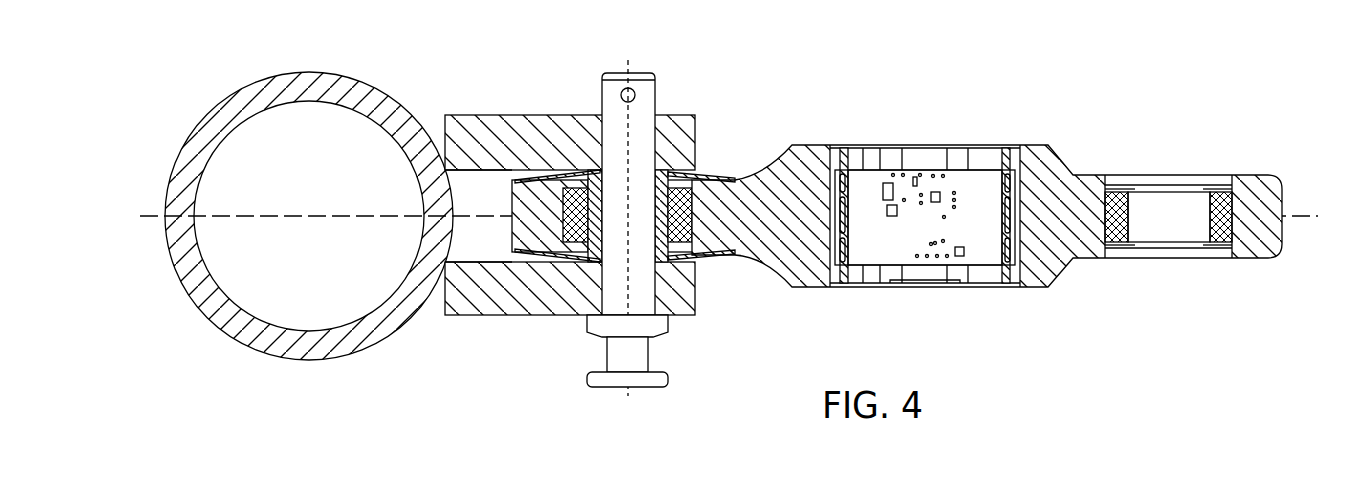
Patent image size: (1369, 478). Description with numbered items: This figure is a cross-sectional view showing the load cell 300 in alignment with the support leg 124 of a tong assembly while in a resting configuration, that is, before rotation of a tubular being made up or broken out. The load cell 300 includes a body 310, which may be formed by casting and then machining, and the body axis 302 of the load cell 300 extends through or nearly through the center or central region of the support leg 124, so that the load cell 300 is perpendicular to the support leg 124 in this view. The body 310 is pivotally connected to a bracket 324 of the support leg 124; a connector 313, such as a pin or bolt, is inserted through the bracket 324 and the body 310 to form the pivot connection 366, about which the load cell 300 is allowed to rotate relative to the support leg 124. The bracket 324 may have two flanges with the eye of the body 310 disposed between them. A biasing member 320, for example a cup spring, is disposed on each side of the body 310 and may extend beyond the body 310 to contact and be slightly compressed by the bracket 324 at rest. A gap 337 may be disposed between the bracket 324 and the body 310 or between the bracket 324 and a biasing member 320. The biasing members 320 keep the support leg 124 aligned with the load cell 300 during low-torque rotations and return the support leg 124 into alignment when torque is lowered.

The support leg 124 is at (297, 362).
The load cell 300 is at (901, 247).
The longitudinal axis 302 is at (1295, 219).
The body 310 is at (1040, 143).
The connector 313 is at (640, 73).
The biasing member 320 is at (705, 172).
The bracket 324 is at (495, 115).
The gap 337 is at (492, 244).
The pivot connection 366 is at (684, 329).